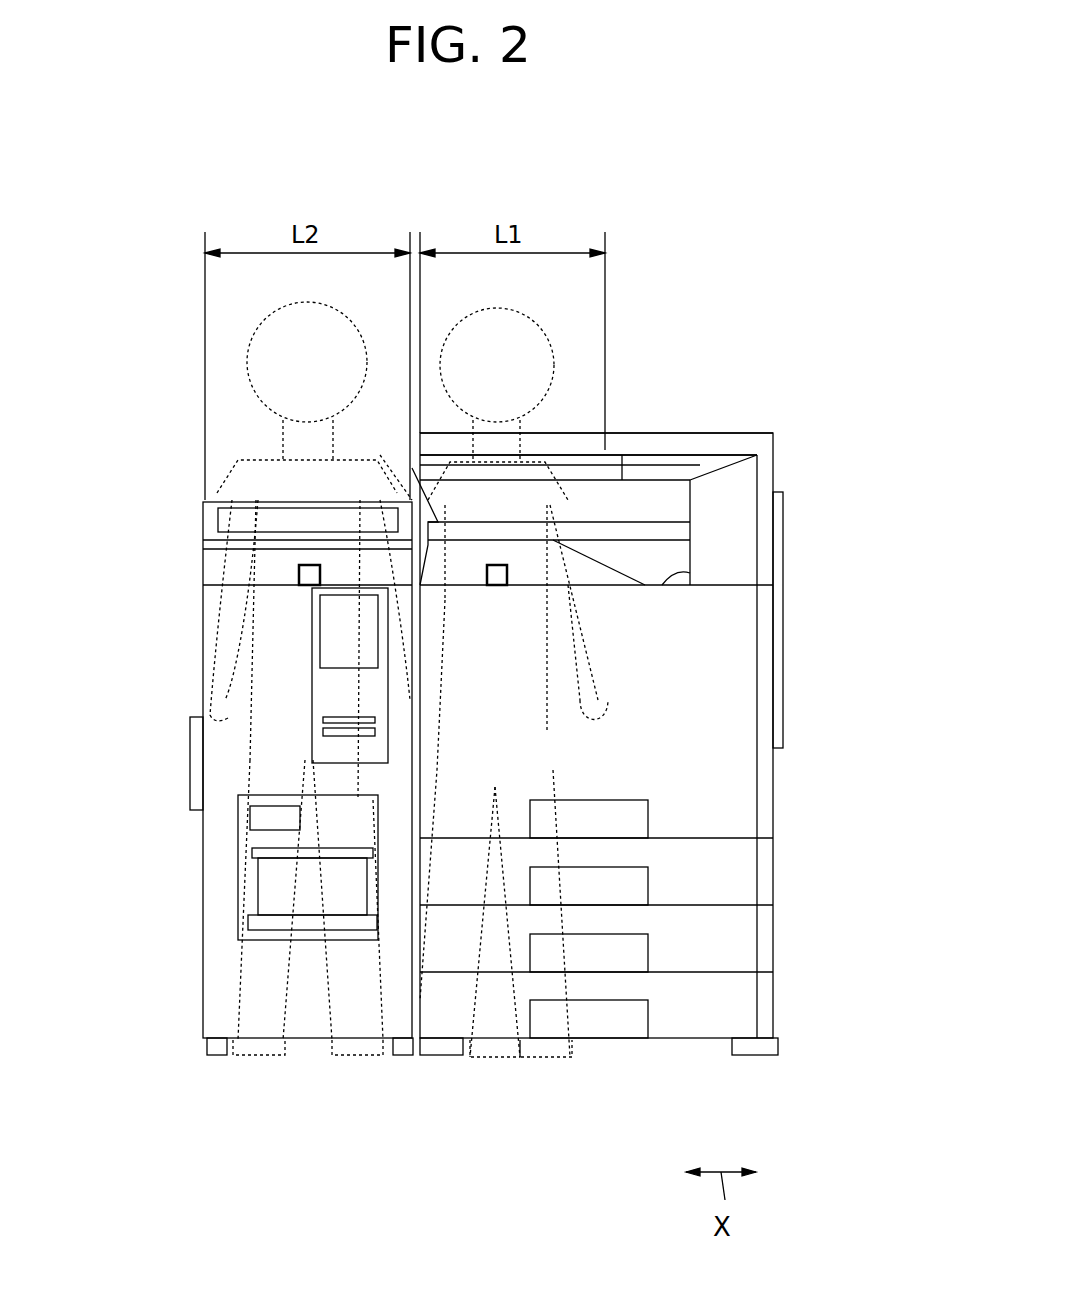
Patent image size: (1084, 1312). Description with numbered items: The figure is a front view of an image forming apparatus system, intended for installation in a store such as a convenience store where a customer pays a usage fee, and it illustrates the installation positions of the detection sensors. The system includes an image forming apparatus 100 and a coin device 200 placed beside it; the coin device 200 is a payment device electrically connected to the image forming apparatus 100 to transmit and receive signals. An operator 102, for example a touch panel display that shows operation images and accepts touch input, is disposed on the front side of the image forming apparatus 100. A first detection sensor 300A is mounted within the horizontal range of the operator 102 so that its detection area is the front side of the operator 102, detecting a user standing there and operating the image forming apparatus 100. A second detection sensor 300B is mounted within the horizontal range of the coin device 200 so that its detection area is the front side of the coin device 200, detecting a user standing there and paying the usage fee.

The image forming apparatus 100 is at (790, 861).
The coin device 200 is at (184, 861).
The operator 102 is at (538, 450).
The first detection sensor 300A is at (497, 588).
The second detection sensor 300B is at (298, 574).